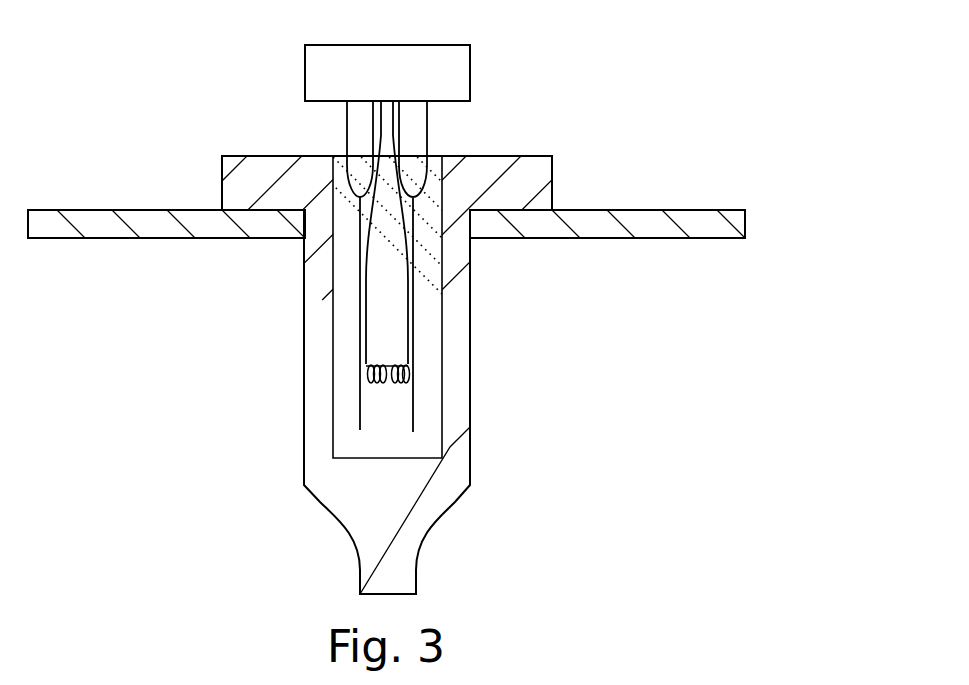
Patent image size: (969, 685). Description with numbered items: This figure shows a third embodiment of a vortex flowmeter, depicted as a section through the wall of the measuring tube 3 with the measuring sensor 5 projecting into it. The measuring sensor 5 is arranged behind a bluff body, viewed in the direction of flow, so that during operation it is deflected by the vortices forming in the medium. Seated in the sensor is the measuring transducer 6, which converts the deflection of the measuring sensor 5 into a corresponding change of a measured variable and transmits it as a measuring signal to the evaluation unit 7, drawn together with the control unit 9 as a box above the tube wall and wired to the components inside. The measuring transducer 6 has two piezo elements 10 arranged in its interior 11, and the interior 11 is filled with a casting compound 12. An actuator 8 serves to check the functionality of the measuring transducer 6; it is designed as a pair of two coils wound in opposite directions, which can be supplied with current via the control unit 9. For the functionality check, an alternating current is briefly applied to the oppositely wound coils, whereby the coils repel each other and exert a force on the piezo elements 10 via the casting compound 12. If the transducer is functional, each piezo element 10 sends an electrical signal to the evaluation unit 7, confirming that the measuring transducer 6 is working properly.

The measuring tube 3 is at (638, 210).
The measuring sensor 5 is at (387, 541).
The measuring transducer 6 is at (522, 297).
The evaluation unit 7 is at (424, 52).
The actuator 8 is at (395, 427).
The control unit 9 is at (472, 72).
The piezo elements 10 is at (360, 407).
The interior 11 is at (330, 270).
The casting compound 12 is at (430, 315).